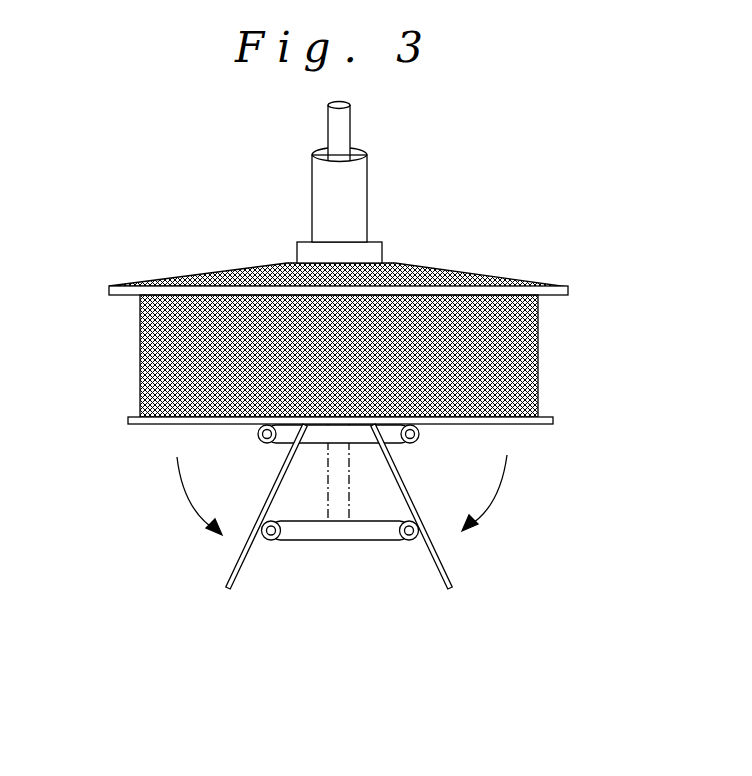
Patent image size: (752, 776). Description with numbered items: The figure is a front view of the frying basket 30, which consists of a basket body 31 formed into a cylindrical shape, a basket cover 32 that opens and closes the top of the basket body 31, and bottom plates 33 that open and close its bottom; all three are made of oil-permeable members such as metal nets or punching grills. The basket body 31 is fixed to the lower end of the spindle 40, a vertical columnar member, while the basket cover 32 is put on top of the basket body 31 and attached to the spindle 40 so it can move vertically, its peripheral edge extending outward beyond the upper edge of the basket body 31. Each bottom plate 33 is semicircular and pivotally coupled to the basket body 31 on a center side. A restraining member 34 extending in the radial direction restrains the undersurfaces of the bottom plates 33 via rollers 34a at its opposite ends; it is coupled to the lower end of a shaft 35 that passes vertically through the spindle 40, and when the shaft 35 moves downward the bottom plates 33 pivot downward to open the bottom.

The frying basket 30 is at (321, 351).
The basket body 31 is at (140, 348).
The basket cover 32 is at (211, 268).
The bottom plates 33 is at (172, 424).
The restraining member 34 is at (420, 443).
The rollers 34a is at (267, 443).
The shaft 35 is at (340, 128).
The spindle 40 is at (367, 199).